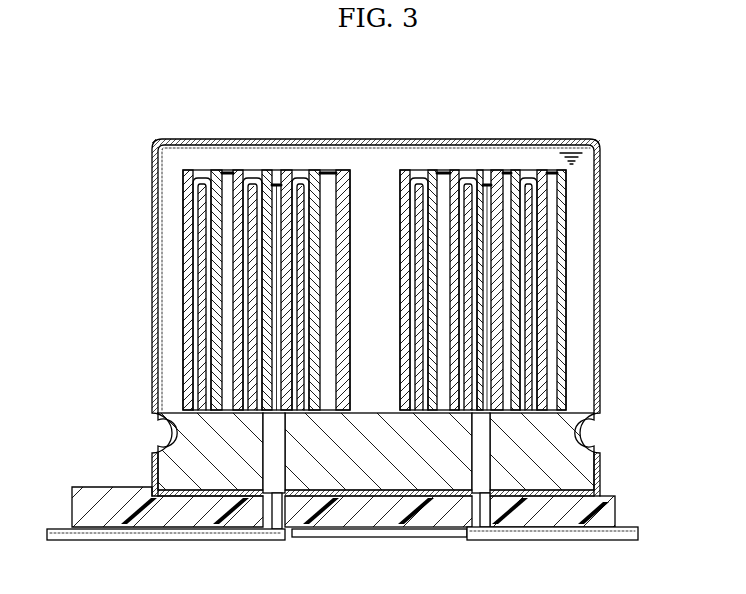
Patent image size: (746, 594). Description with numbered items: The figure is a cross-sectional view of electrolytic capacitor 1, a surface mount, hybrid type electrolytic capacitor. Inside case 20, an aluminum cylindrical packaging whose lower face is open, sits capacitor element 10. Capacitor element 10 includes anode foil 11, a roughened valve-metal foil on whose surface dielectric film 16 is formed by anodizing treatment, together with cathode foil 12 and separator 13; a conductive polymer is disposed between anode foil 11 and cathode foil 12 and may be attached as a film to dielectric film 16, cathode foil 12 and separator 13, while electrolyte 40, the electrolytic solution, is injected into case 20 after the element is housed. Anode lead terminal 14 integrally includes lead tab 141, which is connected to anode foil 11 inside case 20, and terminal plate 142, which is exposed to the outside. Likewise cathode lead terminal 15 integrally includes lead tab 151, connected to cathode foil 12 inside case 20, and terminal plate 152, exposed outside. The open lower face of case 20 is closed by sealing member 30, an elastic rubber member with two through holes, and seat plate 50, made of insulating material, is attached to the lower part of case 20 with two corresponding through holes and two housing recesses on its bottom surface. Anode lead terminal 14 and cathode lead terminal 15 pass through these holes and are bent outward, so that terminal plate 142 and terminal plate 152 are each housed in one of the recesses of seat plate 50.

The electrolytic capacitor 1 is at (597, 91).
The capacitor element 10 is at (183, 185).
The anode foil 11 is at (531, 177).
The cathode foil 12 is at (563, 188).
The separator 13 is at (406, 171).
The anode lead terminal 14 is at (517, 541).
The lead tab 141 is at (486, 184).
The terminal plate 142 is at (625, 534).
The cathode lead terminal 15 is at (183, 539).
The lead tab 151 is at (277, 184).
The terminal plate 152 is at (54, 528).
The dielectric film 16 is at (465, 176).
The case 20 is at (177, 138).
The sealing member 30 is at (550, 446).
The electrolyte 40 is at (583, 157).
The seat plate 50 is at (99, 488).